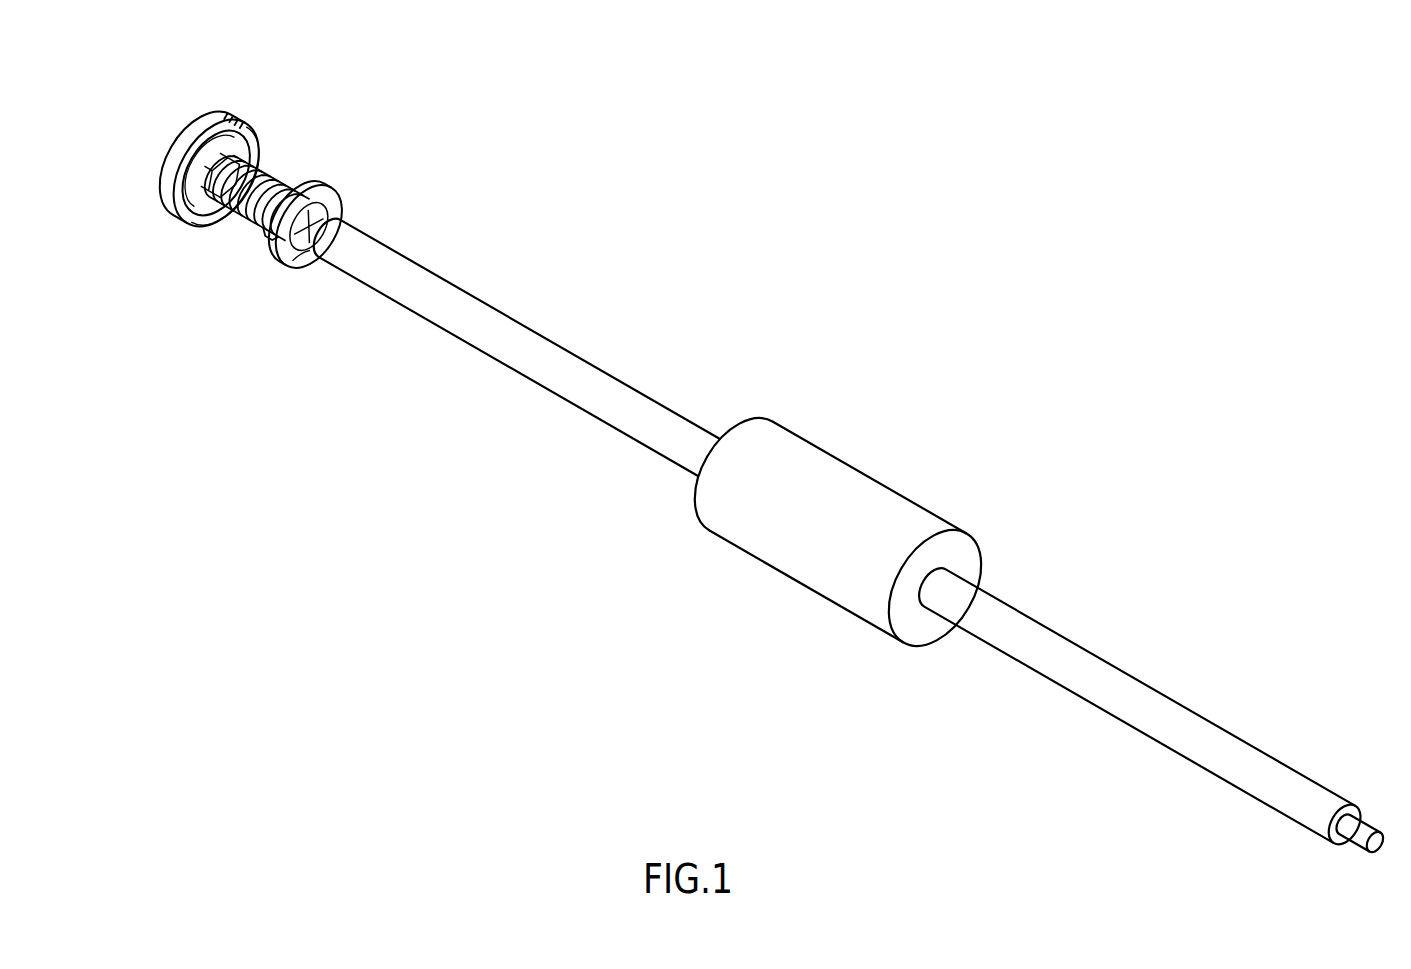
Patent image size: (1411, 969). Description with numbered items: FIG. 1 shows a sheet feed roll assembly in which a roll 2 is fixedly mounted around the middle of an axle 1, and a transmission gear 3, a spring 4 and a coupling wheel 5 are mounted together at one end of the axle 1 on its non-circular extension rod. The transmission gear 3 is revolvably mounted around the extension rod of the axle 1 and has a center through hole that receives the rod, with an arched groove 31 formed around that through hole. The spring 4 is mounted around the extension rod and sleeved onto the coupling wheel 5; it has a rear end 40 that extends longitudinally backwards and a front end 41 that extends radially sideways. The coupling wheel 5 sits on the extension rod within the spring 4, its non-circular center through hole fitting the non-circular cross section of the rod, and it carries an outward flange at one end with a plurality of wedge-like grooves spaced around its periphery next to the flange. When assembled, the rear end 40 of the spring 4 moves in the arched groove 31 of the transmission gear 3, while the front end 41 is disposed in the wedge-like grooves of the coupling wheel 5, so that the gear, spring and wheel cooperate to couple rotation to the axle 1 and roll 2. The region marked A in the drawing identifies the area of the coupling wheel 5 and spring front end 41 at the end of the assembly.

The axle 1 is at (523, 360).
The roll 2 is at (827, 502).
The transmission gear 3 is at (182, 145).
The arched groove 31 is at (250, 125).
The spring 4 is at (237, 213).
The rear end 40 is at (222, 117).
The front end 41 is at (267, 232).
The coupling wheel 5 is at (302, 198).
The detail region A is at (300, 260).